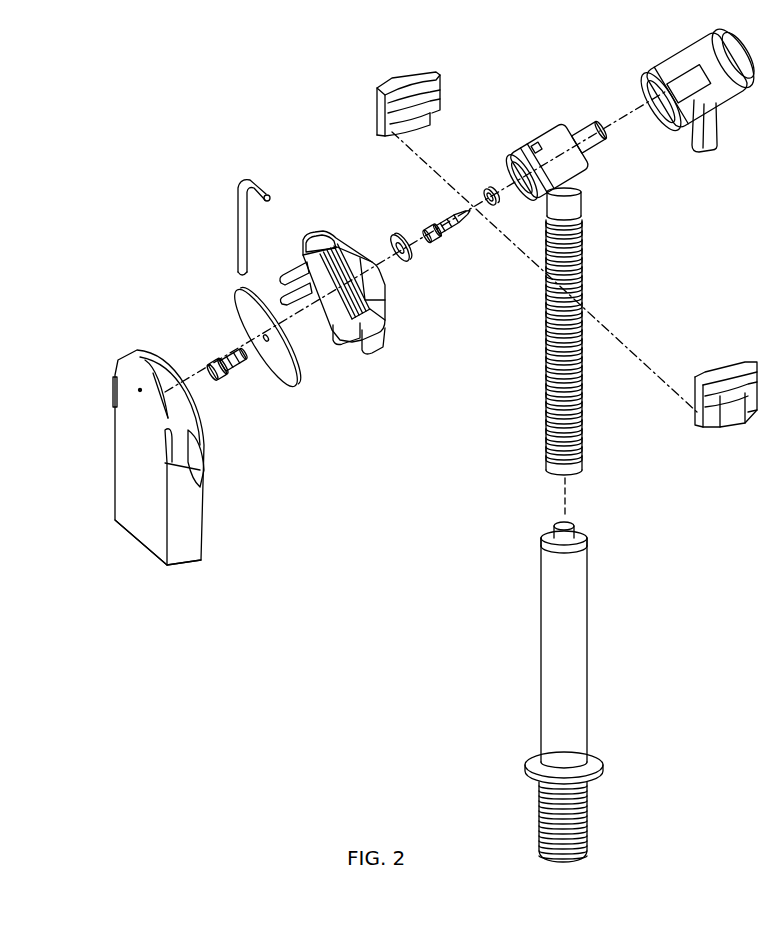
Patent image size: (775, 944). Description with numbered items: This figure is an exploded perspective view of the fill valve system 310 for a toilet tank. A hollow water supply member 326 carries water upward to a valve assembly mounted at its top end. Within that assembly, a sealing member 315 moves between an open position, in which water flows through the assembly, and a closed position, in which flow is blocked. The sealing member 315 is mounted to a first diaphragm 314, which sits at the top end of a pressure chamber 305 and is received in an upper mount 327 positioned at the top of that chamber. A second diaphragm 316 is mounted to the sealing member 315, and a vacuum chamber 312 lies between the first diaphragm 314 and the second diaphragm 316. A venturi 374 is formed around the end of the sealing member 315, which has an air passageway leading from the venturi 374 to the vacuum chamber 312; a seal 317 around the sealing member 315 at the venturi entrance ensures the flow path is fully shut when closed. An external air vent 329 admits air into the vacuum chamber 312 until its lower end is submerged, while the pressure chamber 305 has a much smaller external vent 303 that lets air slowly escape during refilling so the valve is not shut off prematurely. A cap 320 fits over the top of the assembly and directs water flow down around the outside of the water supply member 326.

The external vent 303 is at (140, 391).
The pressure chamber 305 is at (144, 527).
The fill valve system 310 is at (551, 263).
The vacuum chamber 312 is at (354, 243).
The first diaphragm 314 is at (282, 378).
The sealing member 315 is at (460, 214).
The second diaphragm 316 is at (417, 266).
The seal 317 is at (487, 192).
The cap 320 is at (704, 64).
The water supply member 326 is at (553, 630).
The upper mount 327 is at (376, 341).
The external air vent 329 is at (238, 222).
The venturi 374 is at (598, 117).